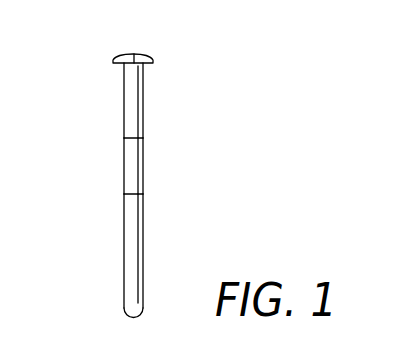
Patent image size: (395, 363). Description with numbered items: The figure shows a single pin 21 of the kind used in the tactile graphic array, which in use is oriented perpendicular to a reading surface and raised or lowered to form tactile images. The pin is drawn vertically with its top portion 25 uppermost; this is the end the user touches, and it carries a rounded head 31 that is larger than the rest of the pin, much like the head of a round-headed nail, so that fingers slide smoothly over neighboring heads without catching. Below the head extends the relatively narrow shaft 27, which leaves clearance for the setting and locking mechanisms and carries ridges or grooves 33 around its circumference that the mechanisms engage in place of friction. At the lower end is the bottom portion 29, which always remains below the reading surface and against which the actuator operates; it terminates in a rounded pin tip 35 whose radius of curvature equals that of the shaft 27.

The pin 21 is at (206, 150).
The rounded head 31 is at (117, 66).
The top portion 25 is at (124, 89).
The ridges or grooves 33 is at (133, 138).
The shaft 27 is at (124, 168).
The bottom portion 29 is at (124, 281).
The rounded pin tip 35 is at (128, 314).